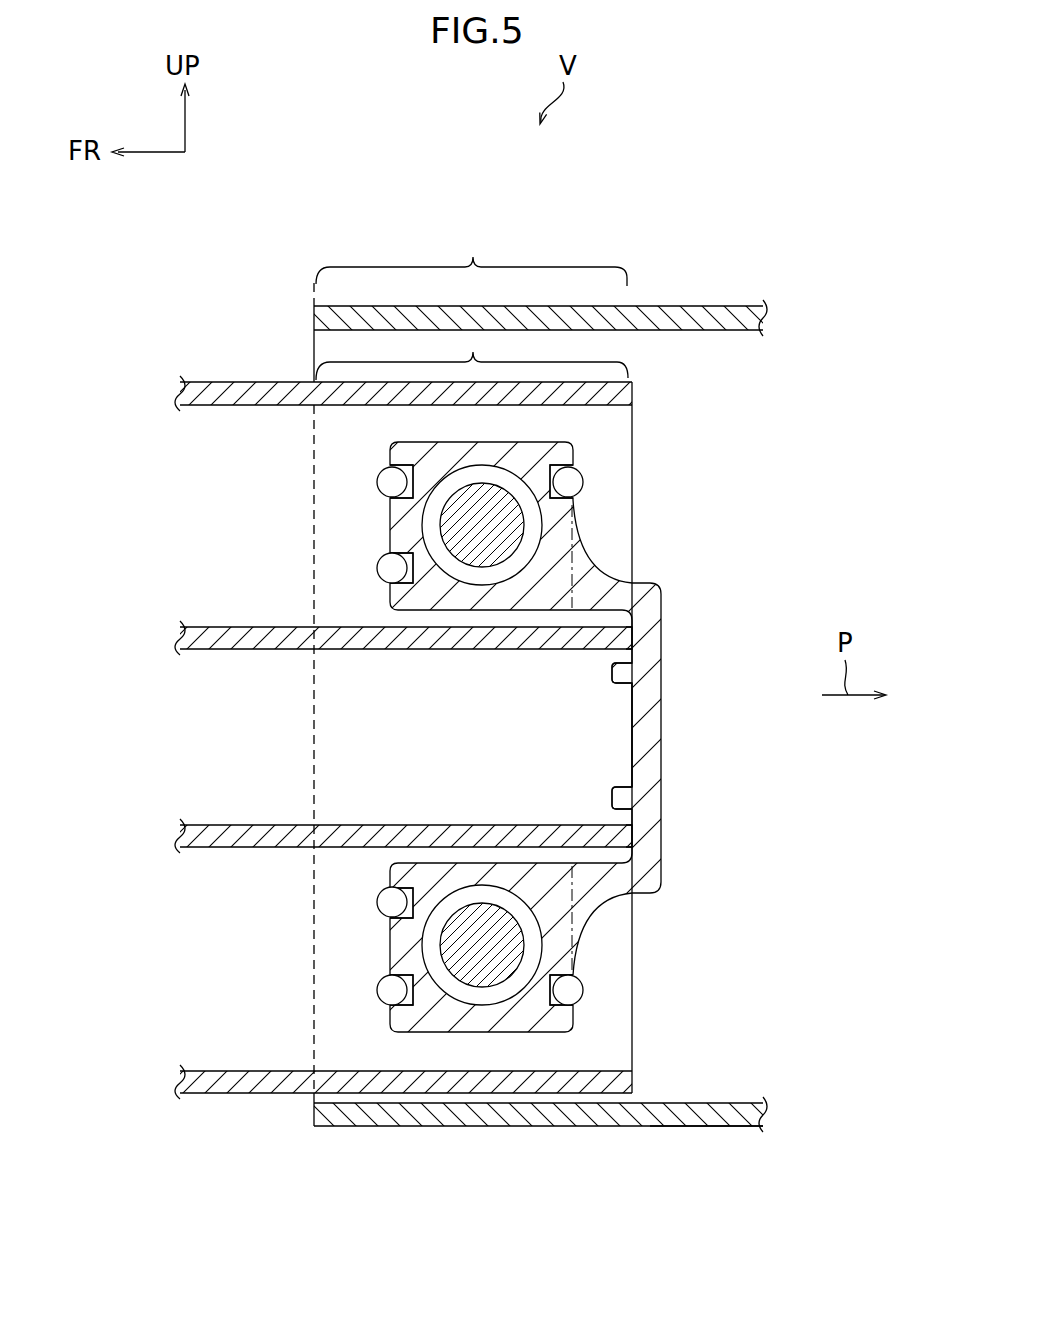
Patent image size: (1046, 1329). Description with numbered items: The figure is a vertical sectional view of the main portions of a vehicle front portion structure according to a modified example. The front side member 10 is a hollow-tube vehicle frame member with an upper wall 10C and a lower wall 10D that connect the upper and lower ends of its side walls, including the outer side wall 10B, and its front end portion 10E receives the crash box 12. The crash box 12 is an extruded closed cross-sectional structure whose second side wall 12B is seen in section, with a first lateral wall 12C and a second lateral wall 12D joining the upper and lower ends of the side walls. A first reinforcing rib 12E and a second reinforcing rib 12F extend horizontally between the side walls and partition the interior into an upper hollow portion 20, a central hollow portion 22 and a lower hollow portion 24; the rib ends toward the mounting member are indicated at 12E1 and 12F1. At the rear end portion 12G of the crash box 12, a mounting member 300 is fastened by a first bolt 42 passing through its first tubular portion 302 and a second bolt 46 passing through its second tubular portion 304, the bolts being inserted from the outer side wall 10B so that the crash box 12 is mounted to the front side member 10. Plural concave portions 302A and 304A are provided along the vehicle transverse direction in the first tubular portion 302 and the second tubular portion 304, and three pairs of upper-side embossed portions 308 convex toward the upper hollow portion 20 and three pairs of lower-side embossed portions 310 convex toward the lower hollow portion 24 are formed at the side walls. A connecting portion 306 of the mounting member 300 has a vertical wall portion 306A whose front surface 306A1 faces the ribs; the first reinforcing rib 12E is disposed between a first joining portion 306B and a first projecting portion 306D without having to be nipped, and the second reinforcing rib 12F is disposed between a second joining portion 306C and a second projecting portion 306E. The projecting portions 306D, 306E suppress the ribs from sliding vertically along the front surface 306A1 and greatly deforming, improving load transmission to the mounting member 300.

The front side member 10 is at (540, 685).
The outer side wall 10B is at (704, 1128).
The upper wall 10C is at (658, 305).
The lower wall 10D is at (613, 1128).
The front end portion 10E is at (471, 253).
The crash box 12 is at (408, 688).
The second side wall 12B is at (605, 434).
The first lateral wall 12C is at (233, 380).
The second lateral wall 12D is at (230, 1096).
The first reinforcing rib 12E is at (215, 616).
The end portion of upper partition wall 12E1 is at (636, 634).
The second reinforcing rib 12F is at (235, 858).
The end portion of lower partition wall 12F1 is at (634, 851).
The rear end portion 12G is at (473, 348).
The upper hollow portion 20 is at (270, 537).
The central hollow portion 22 is at (270, 749).
The lower hollow portion 24 is at (270, 974).
The first bolt 42 is at (458, 494).
The second bolt 46 is at (460, 988).
The mounting member 300 is at (529, 801).
The first tubular portion 302 is at (557, 542).
The concave portions 302A is at (392, 458).
The second tubular portion 304 is at (557, 928).
The concave portions 304A is at (397, 874).
The connecting portion 306 is at (634, 737).
The vertical wall portion 306A is at (664, 752).
The front surface 306A1 is at (632, 748).
The first joining portion 306B is at (608, 563).
The second joining portion 306C is at (595, 888).
The first projecting portion 306D is at (612, 670).
The second projecting portion 306E is at (612, 804).
The upper-side embossed portions 308 is at (378, 486).
The lower-side embossed portions 310 is at (378, 904).